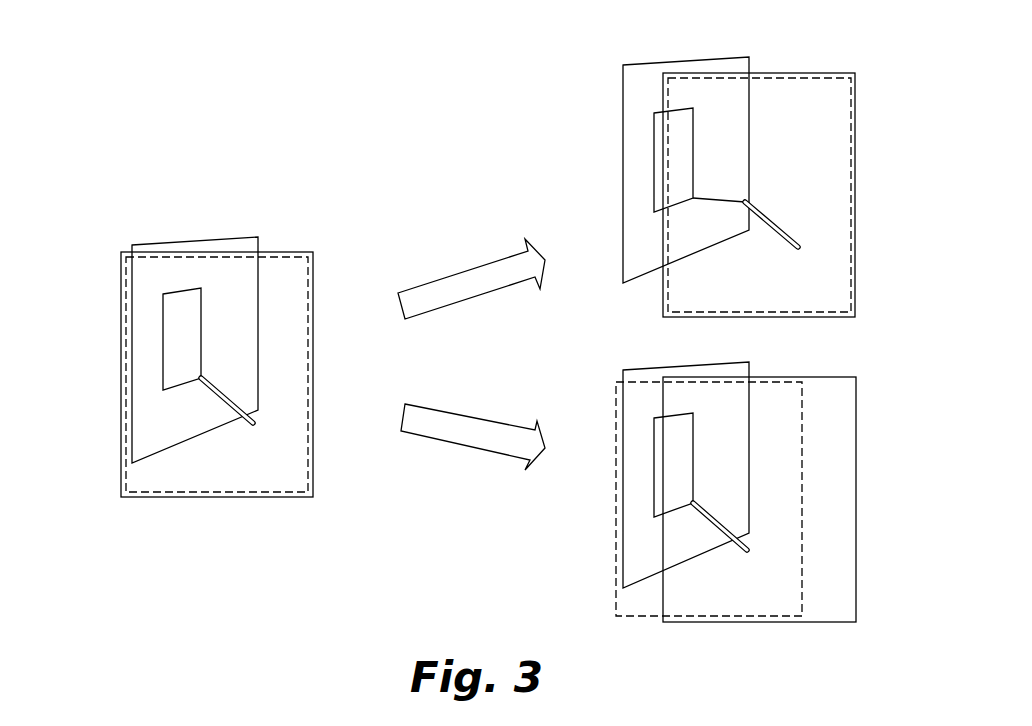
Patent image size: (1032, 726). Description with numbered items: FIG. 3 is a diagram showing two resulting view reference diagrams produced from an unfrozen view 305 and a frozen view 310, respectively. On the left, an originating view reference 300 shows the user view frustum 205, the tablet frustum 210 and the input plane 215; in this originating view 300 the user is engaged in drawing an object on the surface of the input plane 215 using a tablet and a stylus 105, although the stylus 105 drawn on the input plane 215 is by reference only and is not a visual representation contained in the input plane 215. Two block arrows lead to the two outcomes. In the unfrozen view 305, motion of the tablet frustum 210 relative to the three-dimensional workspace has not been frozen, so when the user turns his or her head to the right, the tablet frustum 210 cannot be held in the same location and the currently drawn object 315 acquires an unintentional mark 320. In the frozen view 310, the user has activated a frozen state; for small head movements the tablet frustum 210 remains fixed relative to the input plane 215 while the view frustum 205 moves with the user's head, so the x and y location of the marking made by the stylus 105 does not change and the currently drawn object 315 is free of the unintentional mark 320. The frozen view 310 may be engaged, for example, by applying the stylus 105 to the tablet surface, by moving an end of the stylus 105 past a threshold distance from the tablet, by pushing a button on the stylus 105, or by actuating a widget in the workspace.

The stylus 105 is at (240, 415).
The user view frustum 205 is at (277, 252).
The tablet frustum 210 is at (290, 492).
The input plane 215 is at (180, 240).
The originating view reference 300 is at (109, 120).
The unfrozen view 305 is at (570, 102).
The frozen view 310 is at (569, 594).
The currently drawn object 315 is at (146, 334).
The unintentional mark 320 is at (730, 187).